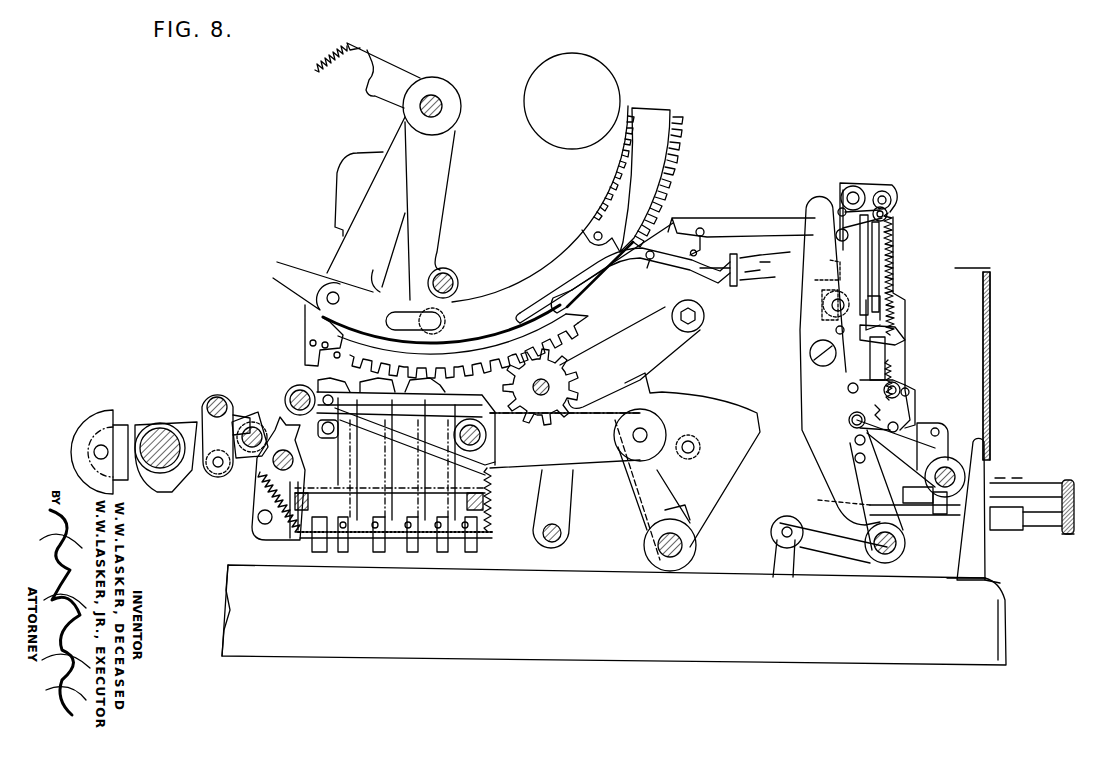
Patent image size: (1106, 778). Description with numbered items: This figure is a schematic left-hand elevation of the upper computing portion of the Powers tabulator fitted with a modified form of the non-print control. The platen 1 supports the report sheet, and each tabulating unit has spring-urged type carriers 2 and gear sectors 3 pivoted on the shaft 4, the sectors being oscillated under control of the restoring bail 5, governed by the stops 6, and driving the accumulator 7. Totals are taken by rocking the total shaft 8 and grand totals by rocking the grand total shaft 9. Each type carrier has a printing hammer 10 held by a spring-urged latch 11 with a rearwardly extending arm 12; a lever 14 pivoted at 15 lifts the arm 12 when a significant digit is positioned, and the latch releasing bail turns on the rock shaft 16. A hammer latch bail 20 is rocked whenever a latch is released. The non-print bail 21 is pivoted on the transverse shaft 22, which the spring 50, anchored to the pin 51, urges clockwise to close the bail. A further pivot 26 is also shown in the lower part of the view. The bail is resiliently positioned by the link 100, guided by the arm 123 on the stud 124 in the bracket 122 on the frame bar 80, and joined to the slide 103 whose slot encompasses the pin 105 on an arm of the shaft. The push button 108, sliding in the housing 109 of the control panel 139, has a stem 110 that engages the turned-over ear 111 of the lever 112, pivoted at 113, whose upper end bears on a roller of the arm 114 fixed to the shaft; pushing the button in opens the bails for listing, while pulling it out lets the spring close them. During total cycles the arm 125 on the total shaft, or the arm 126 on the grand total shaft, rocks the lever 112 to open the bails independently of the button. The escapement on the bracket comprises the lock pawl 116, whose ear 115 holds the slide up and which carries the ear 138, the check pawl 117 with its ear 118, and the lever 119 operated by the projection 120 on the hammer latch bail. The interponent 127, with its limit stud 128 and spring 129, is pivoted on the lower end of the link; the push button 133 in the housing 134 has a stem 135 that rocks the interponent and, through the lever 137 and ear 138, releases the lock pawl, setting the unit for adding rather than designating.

The platen 1 is at (590, 78).
The type carrier 2 is at (655, 115).
The gear sector 3 is at (305, 323).
The shaft 4 is at (436, 100).
The restoring bail 5 is at (453, 278).
The stop 6 is at (460, 403).
The accumulator 7 is at (565, 372).
The total shaft 8 is at (893, 550).
The grand total shaft 9 is at (948, 468).
The printing hammer 10 is at (745, 224).
The latch 11 is at (828, 318).
The arm 12 is at (744, 272).
The lever 14 is at (678, 266).
The pivot 15 is at (648, 262).
The rock shaft 16 is at (700, 228).
The hammer latch bail 20 is at (830, 288).
The non-print bail 21 is at (843, 186).
The transverse shaft 22 is at (855, 188).
The pivot shaft 26 is at (688, 542).
The spring 50 is at (892, 196).
The pin 51 is at (880, 186).
The transverse frame bar 80 is at (893, 229).
The link 100 is at (902, 312).
The slide 103 is at (879, 268).
The pin 105 is at (888, 213).
The push button 108 is at (1066, 536).
The housing 109 is at (1005, 530).
The stem 110 is at (948, 520).
The turned-over ear 111 is at (818, 505).
The lever 112 is at (835, 447).
The pivot 113 is at (811, 353).
The arm 114 is at (840, 208).
The ear 115 is at (881, 290).
The lock pawl 116 is at (870, 304).
The check pawl 117 is at (905, 338).
The turned over ear 118 is at (900, 372).
The lever 119 is at (837, 331).
The projection 120 is at (829, 306).
The bracket 122 is at (869, 252).
The arm 123 is at (890, 388).
The stud 124 is at (848, 390).
The arm 125 is at (863, 478).
The arm 126 is at (928, 506).
The interponent 127 is at (912, 402).
The limit stud 128 is at (909, 392).
The spring 129 is at (905, 412).
The push button 133 is at (1070, 482).
The housing 134 is at (1025, 483).
The stem 135 is at (938, 516).
The lever 137 is at (850, 414).
The turned over ear 138 is at (880, 351).
The control panel 139 is at (985, 568).